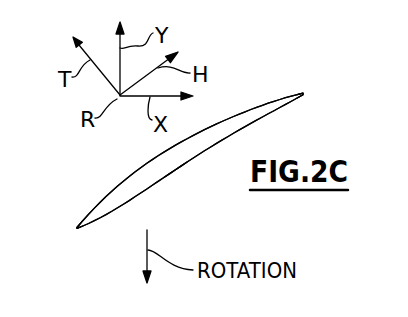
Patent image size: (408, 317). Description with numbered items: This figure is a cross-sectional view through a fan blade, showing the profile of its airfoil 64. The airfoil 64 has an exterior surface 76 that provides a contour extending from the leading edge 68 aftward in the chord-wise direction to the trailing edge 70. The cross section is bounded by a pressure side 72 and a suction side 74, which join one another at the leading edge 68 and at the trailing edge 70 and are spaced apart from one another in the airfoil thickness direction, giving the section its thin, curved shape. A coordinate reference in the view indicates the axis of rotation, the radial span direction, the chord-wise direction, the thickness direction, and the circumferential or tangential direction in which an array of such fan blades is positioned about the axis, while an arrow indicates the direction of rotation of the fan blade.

The airfoil 64 is at (248, 88).
The leading edge 68 is at (77, 230).
The trailing edge 70 is at (303, 93).
The pressure side 72 is at (147, 187).
The suction side 74 is at (152, 160).
The exterior surface 76 is at (177, 167).